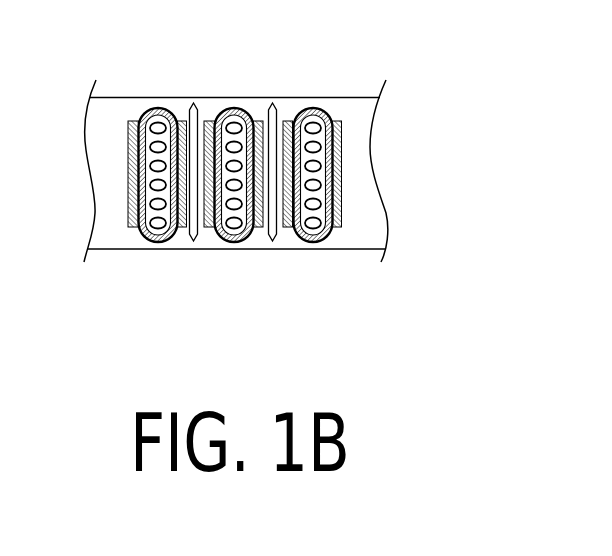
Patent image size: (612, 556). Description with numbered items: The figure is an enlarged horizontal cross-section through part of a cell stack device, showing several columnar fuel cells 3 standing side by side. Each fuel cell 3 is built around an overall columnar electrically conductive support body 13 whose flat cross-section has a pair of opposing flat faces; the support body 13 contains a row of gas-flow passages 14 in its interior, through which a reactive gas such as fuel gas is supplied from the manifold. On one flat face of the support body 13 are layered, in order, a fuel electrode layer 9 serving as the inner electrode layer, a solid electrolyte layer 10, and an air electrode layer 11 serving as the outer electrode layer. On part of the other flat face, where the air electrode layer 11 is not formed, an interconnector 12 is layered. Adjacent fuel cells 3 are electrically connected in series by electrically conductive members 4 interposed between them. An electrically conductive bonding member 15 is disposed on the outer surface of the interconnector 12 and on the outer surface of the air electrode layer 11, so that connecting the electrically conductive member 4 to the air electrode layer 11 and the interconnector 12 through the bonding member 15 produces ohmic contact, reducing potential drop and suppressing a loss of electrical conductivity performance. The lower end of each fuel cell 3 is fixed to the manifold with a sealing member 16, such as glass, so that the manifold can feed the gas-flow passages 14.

The fuel cell 3 is at (313, 99).
The electrically conductive member 4 is at (269, 104).
The fuel electrode layer 9 is at (325, 242).
The solid electrolyte layer 10 is at (301, 241).
The air electrode layer 11 is at (289, 119).
The interconnector 12 is at (334, 118).
The electrically conductive support body 13 is at (297, 238).
The gas-flow passages 14 is at (287, 229).
The electrically conductive bonding member 15 is at (259, 229).
The sealing member 16 is at (181, 239).